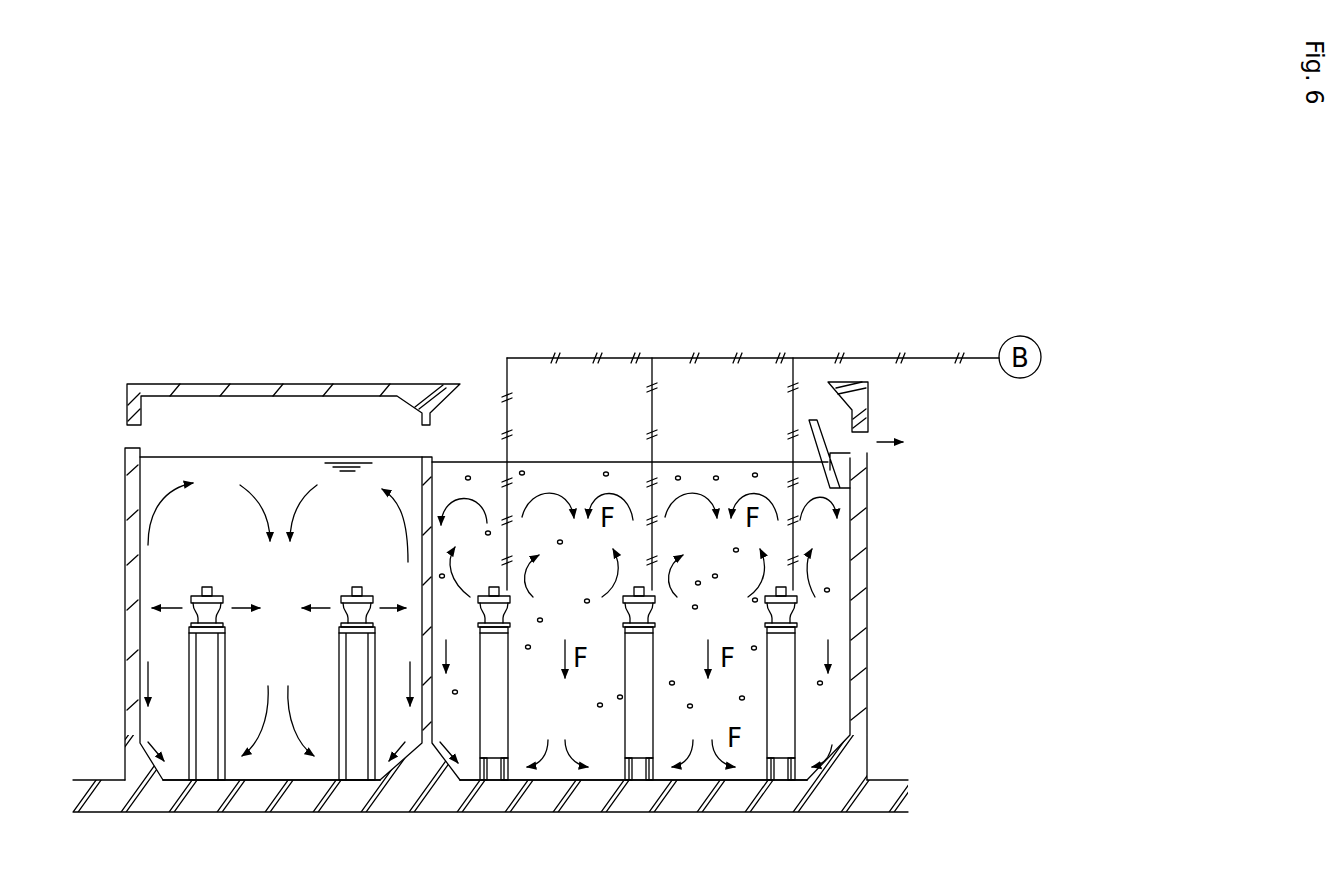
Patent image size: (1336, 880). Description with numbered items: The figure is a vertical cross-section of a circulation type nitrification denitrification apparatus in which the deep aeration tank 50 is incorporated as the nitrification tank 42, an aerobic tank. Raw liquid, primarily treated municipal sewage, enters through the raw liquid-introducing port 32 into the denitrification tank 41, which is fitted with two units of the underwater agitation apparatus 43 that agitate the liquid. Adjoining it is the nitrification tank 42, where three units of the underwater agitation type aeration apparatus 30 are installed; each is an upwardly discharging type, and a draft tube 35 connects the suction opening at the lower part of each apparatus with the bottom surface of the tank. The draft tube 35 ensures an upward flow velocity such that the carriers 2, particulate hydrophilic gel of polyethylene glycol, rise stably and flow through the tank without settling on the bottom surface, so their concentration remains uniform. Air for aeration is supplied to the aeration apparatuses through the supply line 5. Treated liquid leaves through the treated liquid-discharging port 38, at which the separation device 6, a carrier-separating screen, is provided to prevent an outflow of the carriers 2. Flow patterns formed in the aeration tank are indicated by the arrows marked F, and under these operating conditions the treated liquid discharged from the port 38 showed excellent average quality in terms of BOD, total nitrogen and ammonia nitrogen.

The carriers 2 is at (828, 590).
The air supply pipe 5 is at (718, 360).
The separation device 6 is at (850, 453).
The underwater agitation type aeration apparatus 30 is at (793, 610).
The raw liquid-introducing port 32 is at (128, 427).
The draft tube 35 is at (793, 707).
The treated liquid-discharging port 38 is at (863, 443).
The denitrification tank 41 is at (277, 762).
The nitrification tank 42 is at (708, 765).
The underwater agitation apparatus 43 is at (190, 612).
The deep aeration tank 50 is at (638, 340).